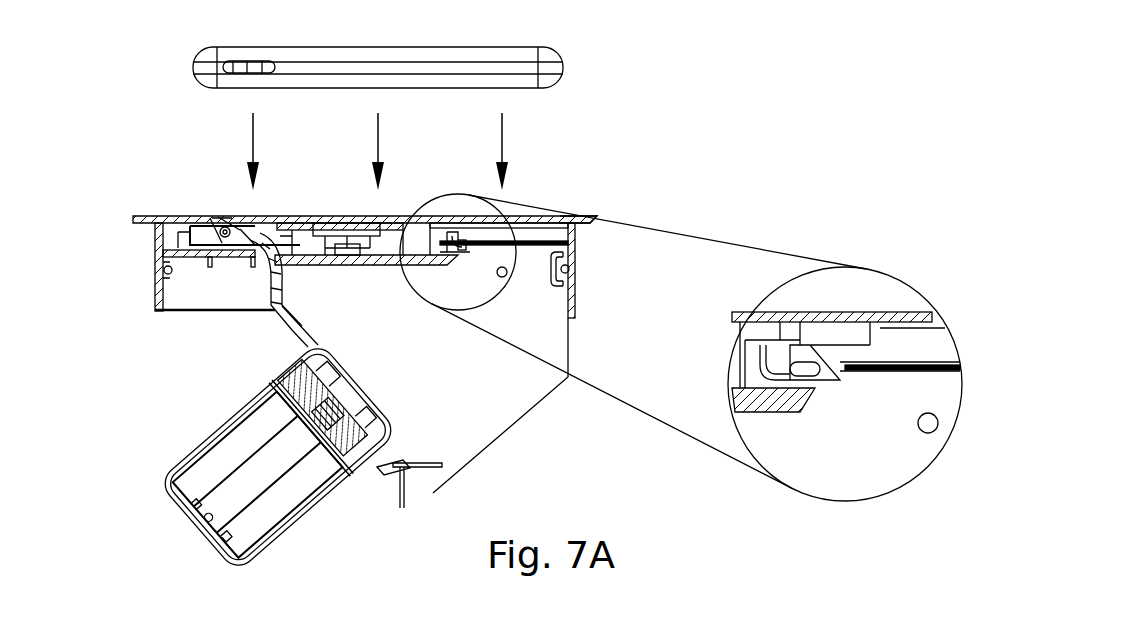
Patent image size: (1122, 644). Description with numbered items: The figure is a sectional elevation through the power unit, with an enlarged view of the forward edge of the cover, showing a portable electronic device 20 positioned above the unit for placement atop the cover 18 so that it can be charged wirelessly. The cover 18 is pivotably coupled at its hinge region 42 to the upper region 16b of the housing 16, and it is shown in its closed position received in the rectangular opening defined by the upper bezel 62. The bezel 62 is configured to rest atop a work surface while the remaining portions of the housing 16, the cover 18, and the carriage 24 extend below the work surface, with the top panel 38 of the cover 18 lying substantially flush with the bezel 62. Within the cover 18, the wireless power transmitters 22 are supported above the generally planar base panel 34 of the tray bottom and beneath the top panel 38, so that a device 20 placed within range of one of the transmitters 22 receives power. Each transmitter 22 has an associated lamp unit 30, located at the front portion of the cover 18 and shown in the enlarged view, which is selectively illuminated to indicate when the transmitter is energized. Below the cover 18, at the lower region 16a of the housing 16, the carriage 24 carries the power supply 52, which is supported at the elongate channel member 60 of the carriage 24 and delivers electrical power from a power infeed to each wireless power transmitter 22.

The portable electronic device 20 is at (503, 46).
The pivotable lid or cover 18 is at (394, 200).
The housing 16 is at (584, 276).
The lower region of housing 16a is at (582, 398).
The upper region of housing 16b is at (618, 212).
The upper bezel 62 is at (132, 229).
The hinge region 42 is at (212, 210).
The top panel 38 is at (298, 217).
The wireless power transmitter 22 is at (390, 262).
The base panel 34 is at (330, 264).
The lamp unit 30 is at (462, 250).
The power supply 52 is at (402, 392).
The carriage 24 is at (193, 428).
The elongate channel member 60 is at (228, 393).